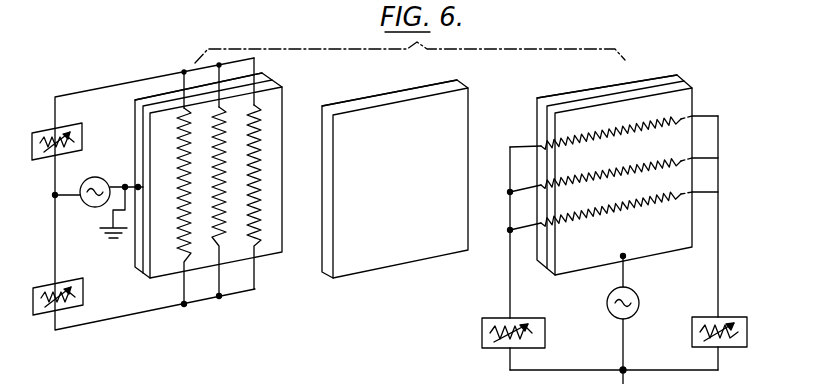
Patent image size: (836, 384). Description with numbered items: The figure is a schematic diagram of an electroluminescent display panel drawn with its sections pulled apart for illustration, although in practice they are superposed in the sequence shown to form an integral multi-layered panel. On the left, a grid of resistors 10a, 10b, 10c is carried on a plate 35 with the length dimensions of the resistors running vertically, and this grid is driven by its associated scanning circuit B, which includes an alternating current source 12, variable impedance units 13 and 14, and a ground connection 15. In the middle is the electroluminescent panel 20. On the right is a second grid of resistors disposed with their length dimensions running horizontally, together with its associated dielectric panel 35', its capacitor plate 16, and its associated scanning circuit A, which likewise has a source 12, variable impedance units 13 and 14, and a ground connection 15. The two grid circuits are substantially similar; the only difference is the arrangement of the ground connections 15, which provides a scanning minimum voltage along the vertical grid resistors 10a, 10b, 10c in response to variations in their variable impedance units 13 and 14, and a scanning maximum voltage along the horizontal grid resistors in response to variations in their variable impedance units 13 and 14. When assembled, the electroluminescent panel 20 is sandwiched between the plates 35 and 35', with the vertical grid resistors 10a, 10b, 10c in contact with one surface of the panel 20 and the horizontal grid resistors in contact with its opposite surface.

The grid resistor 10a is at (182, 257).
The grid resistor 10b is at (222, 227).
The grid resistor 10c is at (257, 222).
The alternating current source 12 is at (83, 203).
The variable impedance unit 13 is at (80, 127).
The variable impedance unit 14 is at (85, 297).
The ground connection 15 is at (123, 182).
The capacitor plate 16 is at (134, 253).
The electroluminescent panel 20 is at (403, 177).
The plate 35 is at (227, 175).
The dielectric panel 35' is at (614, 169).
The scanning circuit A is at (700, 283).
The scanning circuit B is at (113, 117).